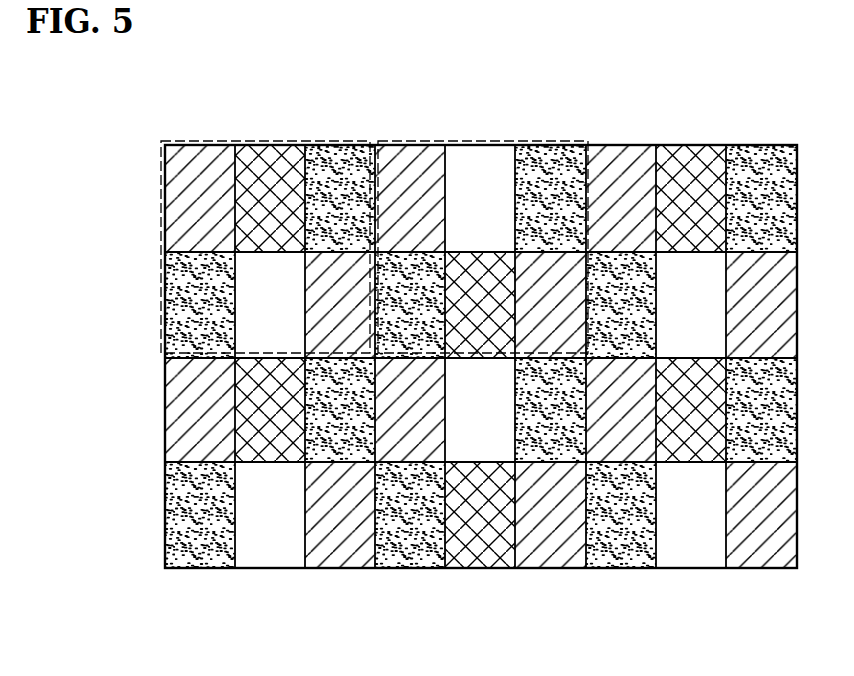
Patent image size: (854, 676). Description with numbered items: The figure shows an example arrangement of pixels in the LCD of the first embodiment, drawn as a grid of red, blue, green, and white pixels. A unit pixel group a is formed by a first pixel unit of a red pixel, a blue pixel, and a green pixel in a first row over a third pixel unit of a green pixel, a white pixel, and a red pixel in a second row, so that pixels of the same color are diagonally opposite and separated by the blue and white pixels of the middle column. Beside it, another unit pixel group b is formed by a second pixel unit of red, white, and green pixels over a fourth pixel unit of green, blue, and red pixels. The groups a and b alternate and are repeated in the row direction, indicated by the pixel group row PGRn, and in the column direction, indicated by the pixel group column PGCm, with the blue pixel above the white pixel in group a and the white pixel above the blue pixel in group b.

The unit pixel group a is at (290, 140).
The unit pixel group b is at (500, 140).
The pixel group row PGRn is at (137, 147).
The pixel group column PGCm is at (165, 593).